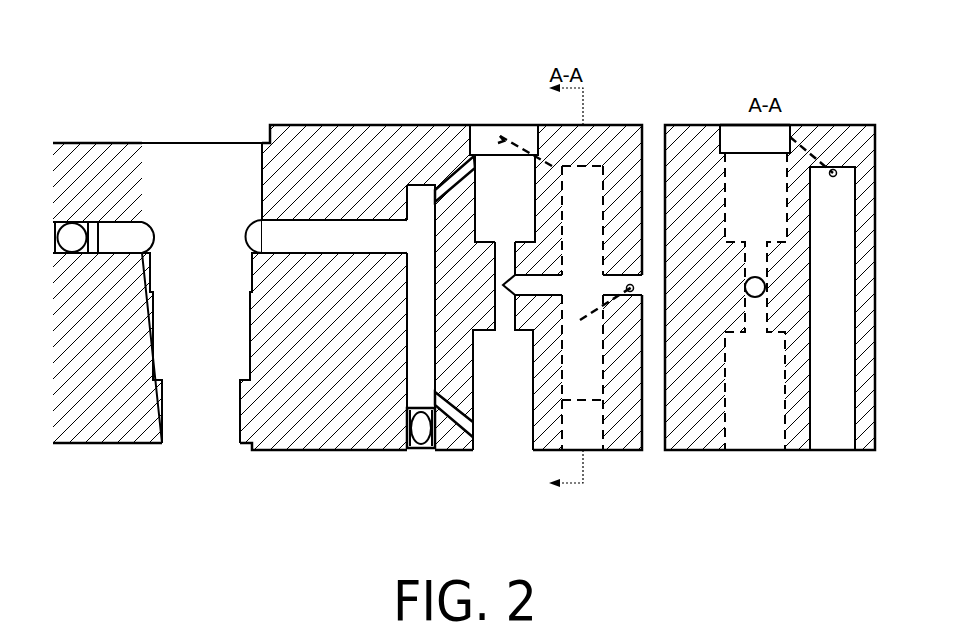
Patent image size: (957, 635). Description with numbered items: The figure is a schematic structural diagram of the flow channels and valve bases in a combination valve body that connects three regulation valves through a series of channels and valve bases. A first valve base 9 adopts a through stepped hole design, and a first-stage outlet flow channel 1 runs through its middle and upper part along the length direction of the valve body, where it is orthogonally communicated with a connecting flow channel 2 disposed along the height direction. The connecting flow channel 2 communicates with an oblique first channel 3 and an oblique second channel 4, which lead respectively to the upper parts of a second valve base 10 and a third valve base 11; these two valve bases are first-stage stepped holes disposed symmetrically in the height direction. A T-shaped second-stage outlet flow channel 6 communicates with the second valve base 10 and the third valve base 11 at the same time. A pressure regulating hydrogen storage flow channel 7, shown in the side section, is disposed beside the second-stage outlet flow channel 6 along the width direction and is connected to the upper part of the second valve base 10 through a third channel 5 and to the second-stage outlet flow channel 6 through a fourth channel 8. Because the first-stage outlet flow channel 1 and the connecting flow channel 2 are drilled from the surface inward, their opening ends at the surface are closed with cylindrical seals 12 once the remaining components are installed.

The first-stage outlet flow channel 1 is at (365, 237).
The connecting flow channel 2 is at (413, 202).
The first channel 3 is at (455, 183).
The second channel 4 is at (409, 432).
The third channel 5 is at (538, 158).
The second-stage outlet flow channel 6 is at (543, 287).
The pressure regulating hydrogen storage flow channel 7 is at (828, 207).
The fourth channel 8 is at (583, 314).
The first valve base 9 is at (198, 182).
The second valve base 10 is at (500, 175).
The third valve base 11 is at (489, 421).
The cylindrical seal 12 is at (78, 242).